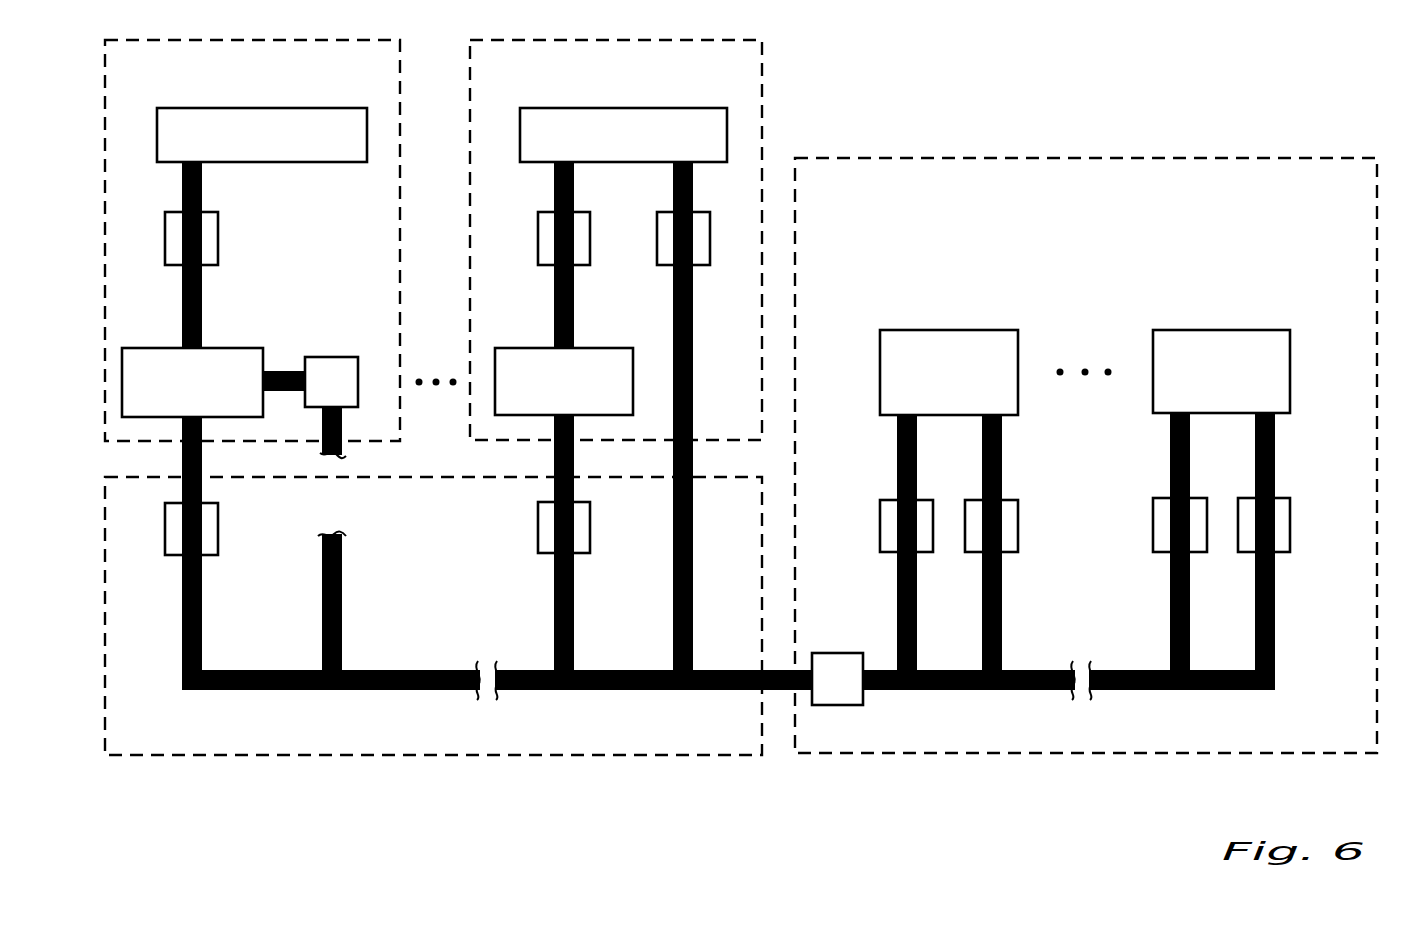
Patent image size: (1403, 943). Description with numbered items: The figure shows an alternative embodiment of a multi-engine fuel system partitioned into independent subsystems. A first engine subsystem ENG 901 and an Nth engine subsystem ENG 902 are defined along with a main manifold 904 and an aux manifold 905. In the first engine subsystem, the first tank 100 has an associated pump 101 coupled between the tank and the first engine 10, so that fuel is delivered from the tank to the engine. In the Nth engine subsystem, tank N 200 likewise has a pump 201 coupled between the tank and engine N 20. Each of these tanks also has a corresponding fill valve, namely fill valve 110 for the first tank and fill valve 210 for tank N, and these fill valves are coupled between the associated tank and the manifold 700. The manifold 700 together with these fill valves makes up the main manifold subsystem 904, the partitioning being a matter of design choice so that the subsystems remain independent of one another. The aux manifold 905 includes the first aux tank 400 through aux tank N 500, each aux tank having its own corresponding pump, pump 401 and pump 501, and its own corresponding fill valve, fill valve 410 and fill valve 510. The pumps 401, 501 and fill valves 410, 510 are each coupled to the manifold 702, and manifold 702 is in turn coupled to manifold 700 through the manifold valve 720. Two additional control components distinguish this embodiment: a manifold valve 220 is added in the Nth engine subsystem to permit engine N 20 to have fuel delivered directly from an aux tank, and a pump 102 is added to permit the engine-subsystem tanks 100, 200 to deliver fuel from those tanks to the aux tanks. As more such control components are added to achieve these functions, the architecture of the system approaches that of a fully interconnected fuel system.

The engine 1 10 is at (317, 109).
The engine N 20 is at (678, 108).
The tank 1 100 is at (160, 348).
The pump 101 is at (218, 240).
The pump 102 is at (328, 357).
The fill valve 110 is at (218, 539).
The tank N 200 is at (540, 348).
The pump 201 is at (590, 222).
The fill valve 210 is at (590, 522).
The manifold valve 220 is at (658, 263).
The aux tank 1 400 is at (942, 330).
The pump 401 is at (1018, 525).
The fill valve 410 is at (880, 525).
The aux tank N 500 is at (1200, 330).
The pump 501 is at (1290, 520).
The fill valve 510 is at (1153, 530).
The manifold 700 is at (675, 690).
The manifold 702 is at (1155, 690).
The manifold valve 720 is at (850, 705).
The ENG1 subsystem 901 is at (293, 83).
The ENGN subsystem 902 is at (653, 82).
The main manifold subsystem 904 is at (520, 518).
The aux manifold 905 is at (1082, 202).